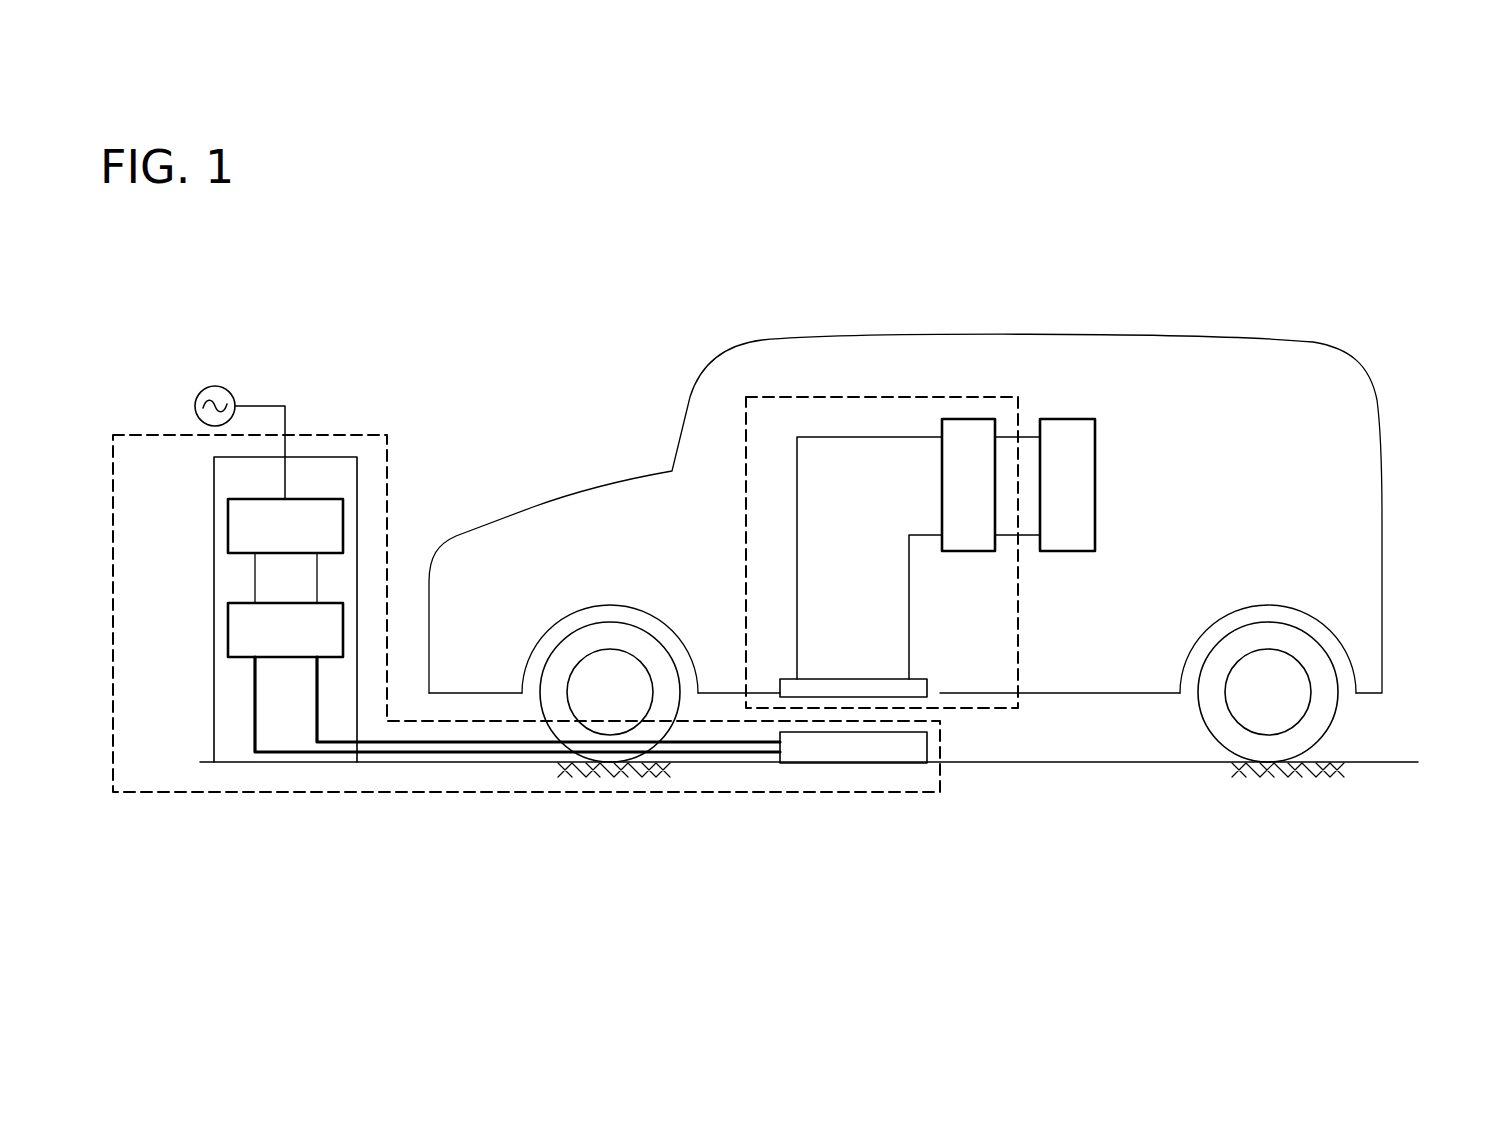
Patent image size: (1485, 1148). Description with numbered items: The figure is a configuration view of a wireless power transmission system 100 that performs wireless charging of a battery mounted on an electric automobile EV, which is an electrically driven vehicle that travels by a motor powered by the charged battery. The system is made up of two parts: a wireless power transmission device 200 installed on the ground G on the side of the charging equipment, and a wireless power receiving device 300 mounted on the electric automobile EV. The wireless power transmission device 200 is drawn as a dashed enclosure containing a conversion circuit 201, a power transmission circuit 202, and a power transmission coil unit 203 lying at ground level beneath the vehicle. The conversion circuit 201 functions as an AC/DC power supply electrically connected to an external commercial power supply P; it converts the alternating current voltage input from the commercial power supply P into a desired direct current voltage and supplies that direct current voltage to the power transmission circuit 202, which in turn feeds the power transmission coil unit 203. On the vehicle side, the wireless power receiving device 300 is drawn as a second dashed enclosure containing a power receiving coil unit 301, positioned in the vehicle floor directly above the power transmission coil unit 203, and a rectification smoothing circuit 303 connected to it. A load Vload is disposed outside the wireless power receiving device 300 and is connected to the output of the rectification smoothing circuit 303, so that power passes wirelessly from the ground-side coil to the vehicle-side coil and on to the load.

The wireless power transmission system 100 is at (548, 293).
The wireless power transmission device 200 is at (526, 585).
The conversion circuit 201 is at (228, 522).
The power transmission circuit 202 is at (228, 630).
The power transmission coil unit 203 is at (853, 752).
The wireless power receiving device 300 is at (893, 528).
The power receiving coil unit 301 is at (852, 688).
The rectification smoothing circuit 303 is at (968, 419).
The commercial power supply P is at (214, 386).
The load Vload is at (1068, 418).
The electric automobile EV is at (1376, 352).
The ground G is at (1390, 762).